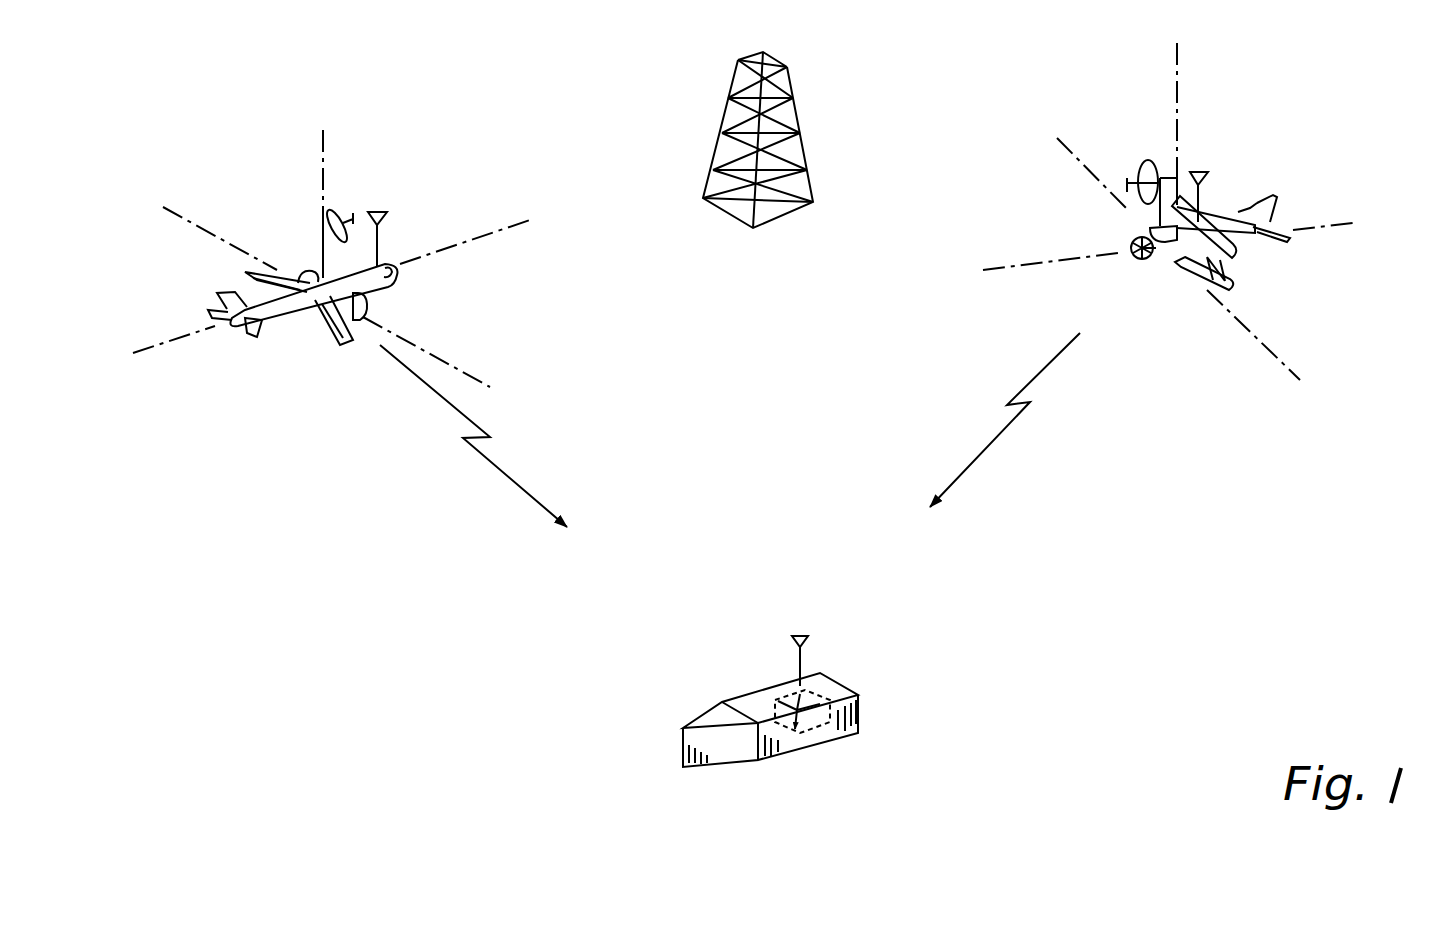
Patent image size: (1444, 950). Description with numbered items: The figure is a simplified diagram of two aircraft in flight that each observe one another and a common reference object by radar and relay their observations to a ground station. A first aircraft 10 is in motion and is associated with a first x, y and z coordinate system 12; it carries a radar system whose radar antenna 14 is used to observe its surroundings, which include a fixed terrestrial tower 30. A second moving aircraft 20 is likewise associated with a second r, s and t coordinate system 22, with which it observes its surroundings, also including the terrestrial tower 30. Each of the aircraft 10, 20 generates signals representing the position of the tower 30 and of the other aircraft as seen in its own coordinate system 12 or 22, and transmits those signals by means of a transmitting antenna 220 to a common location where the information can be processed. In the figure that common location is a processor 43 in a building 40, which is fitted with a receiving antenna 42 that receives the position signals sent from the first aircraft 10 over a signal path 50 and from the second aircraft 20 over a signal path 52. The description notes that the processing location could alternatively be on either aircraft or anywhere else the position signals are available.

The first aircraft 10 is at (309, 376).
The first x, y, and z coordinate system 12 is at (452, 258).
The radar antenna 14 is at (338, 208).
The transmitting antenna 220 is at (386, 210).
The second aircraft 20 is at (1170, 321).
The second r, s, and t coordinate system 22 is at (1073, 274).
The fixed terrestrial tower 30 is at (856, 137).
The building 40 is at (732, 676).
The receiving antenna 42 is at (807, 650).
The processor 43 is at (858, 700).
The signal path 50 is at (502, 462).
The signal path 52 is at (1000, 432).